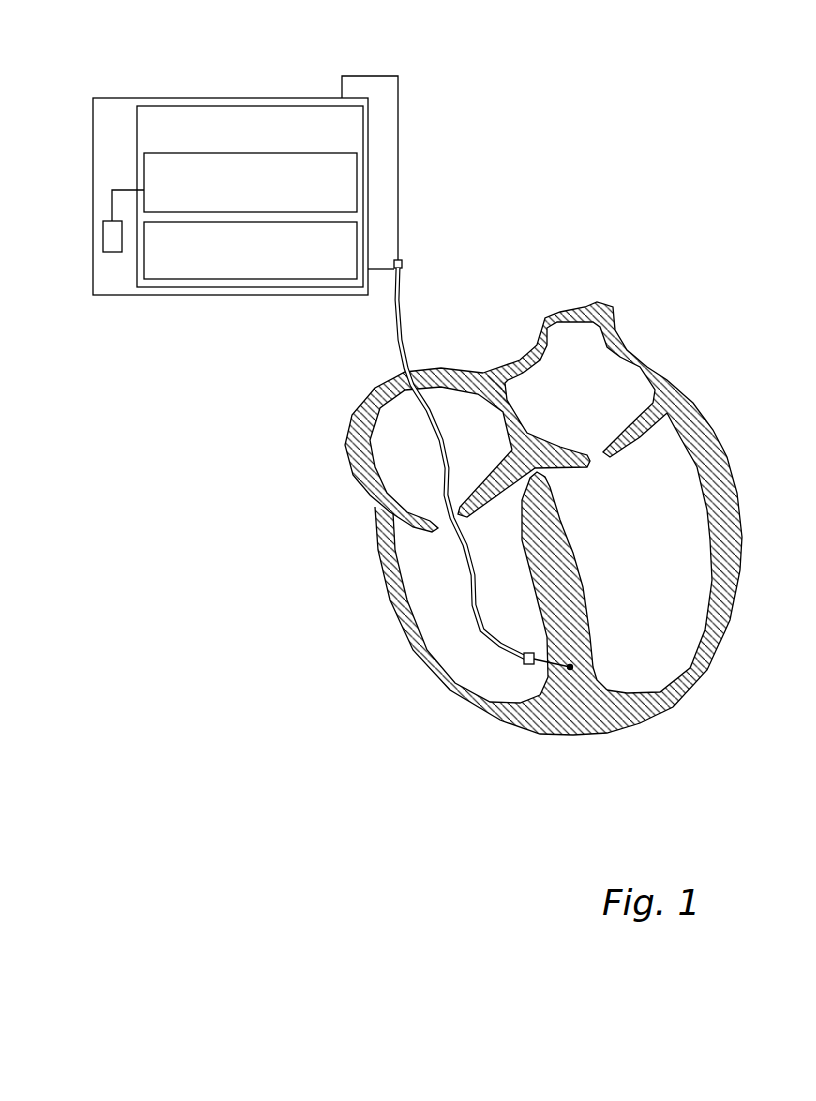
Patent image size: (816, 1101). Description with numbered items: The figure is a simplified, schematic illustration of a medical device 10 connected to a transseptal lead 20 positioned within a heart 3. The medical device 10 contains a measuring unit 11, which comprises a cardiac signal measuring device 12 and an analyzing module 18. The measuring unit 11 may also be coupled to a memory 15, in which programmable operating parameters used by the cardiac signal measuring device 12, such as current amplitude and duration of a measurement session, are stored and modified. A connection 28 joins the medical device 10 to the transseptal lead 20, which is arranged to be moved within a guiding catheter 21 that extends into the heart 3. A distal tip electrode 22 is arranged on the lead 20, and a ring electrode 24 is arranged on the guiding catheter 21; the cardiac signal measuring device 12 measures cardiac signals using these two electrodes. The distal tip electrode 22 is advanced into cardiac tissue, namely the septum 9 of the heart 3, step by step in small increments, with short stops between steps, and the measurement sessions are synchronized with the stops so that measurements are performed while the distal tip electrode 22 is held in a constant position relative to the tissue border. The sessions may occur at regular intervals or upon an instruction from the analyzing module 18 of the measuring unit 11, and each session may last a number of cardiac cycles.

The medical device 10 is at (247, 86).
The measuring unit 11 is at (313, 106).
The cardiac signal measuring device 12 is at (144, 172).
The memory 15 is at (110, 252).
The analyzing module 18 is at (273, 279).
The lead connector 28 is at (400, 247).
The heart 3 is at (713, 413).
The septum 9 is at (572, 615).
The transseptal lead 20 is at (570, 667).
The guiding catheter 21 is at (503, 651).
The distal tip electrode 22 is at (607, 730).
The ring electrode 24 is at (530, 664).